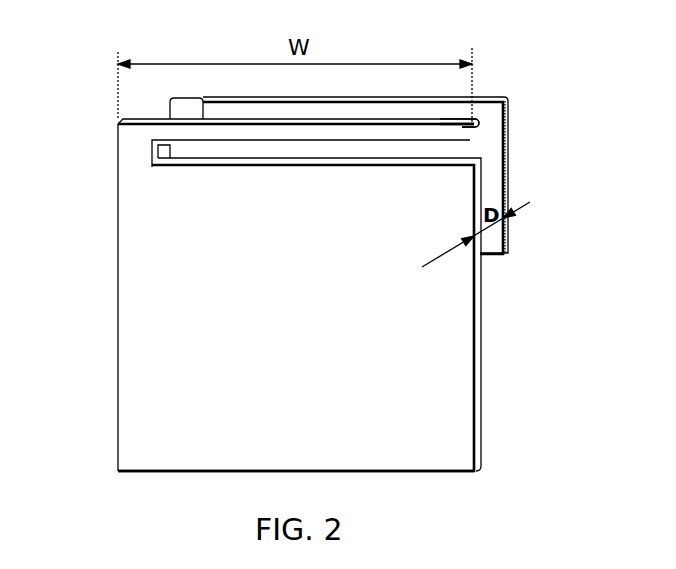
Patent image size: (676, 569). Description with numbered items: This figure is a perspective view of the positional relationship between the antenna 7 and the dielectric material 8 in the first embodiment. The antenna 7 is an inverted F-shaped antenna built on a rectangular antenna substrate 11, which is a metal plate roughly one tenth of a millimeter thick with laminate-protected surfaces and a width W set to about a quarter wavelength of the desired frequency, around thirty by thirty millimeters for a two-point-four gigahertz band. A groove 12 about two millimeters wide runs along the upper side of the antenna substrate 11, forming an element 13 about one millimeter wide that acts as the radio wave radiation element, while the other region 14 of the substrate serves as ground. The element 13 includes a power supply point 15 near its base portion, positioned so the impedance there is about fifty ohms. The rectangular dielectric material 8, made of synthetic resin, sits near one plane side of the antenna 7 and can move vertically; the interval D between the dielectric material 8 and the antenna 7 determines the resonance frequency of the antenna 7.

The antenna 7 is at (302, 272).
The dielectric material 8 is at (497, 96).
The antenna substrate 11 is at (118, 302).
The groove 12 is at (465, 148).
The element 13 is at (474, 133).
The region 14 is at (460, 442).
The power supply point 15 is at (210, 133).